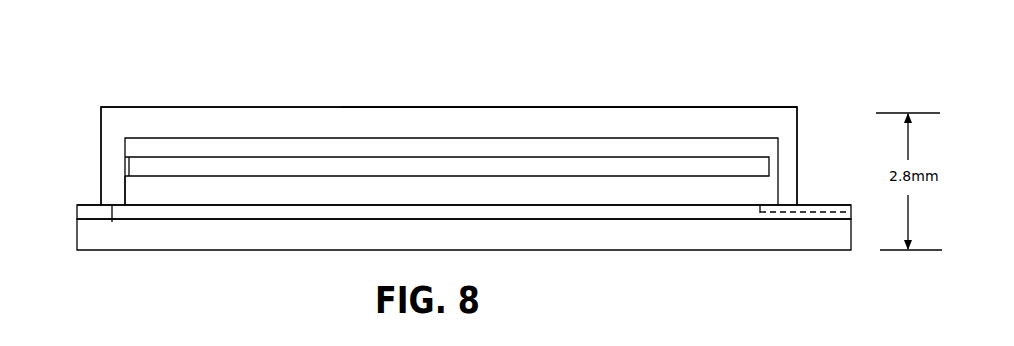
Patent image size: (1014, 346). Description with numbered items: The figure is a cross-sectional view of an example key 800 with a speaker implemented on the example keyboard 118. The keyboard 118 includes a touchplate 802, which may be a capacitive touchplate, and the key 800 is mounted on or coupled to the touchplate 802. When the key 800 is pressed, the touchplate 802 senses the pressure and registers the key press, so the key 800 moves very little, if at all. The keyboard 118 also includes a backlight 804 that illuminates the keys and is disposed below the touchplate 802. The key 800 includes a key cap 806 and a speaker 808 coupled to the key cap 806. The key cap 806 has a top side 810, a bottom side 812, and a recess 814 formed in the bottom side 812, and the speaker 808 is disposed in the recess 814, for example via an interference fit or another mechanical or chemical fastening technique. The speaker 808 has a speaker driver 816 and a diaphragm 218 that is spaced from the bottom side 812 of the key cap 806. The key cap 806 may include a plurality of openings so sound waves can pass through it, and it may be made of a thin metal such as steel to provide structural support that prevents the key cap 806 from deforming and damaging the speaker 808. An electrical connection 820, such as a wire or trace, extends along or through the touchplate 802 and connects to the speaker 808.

The keyboard 118 is at (150, 43).
The key 800 is at (578, 56).
The key cap 806 is at (178, 118).
The top side 810 is at (341, 106).
The recess 814 is at (224, 137).
The diaphragm 218 is at (142, 165).
The speaker 808 is at (124, 182).
The speaker driver 816 is at (148, 193).
The touchplate 802 is at (88, 213).
The backlight 804 is at (88, 236).
The bottom side 812 is at (112, 222).
The electrical connection 820 is at (817, 212).